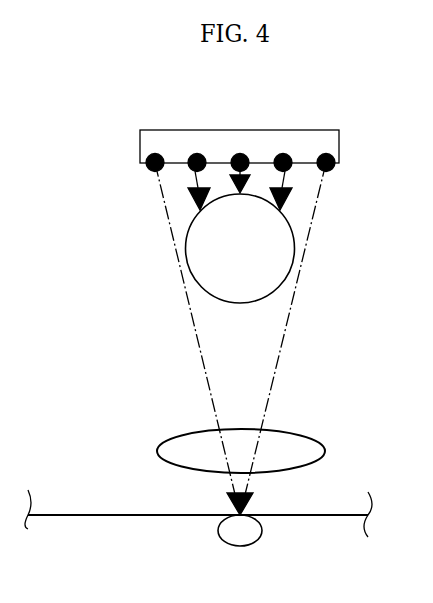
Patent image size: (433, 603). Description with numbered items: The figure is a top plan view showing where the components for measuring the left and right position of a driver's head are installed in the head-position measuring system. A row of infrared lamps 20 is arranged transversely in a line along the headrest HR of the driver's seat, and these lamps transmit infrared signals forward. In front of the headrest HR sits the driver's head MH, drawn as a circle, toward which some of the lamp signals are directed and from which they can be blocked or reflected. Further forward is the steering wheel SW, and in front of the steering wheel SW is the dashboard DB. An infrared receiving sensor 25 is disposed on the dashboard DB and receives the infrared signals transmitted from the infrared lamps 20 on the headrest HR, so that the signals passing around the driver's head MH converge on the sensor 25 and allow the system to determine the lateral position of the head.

The infrared lamps 20 is at (324, 154).
The headrest HR is at (140, 148).
The driver's head MH is at (193, 255).
The steering wheel SW is at (312, 433).
The dashboard DB is at (82, 515).
The infrared receiving sensor 25 is at (238, 546).